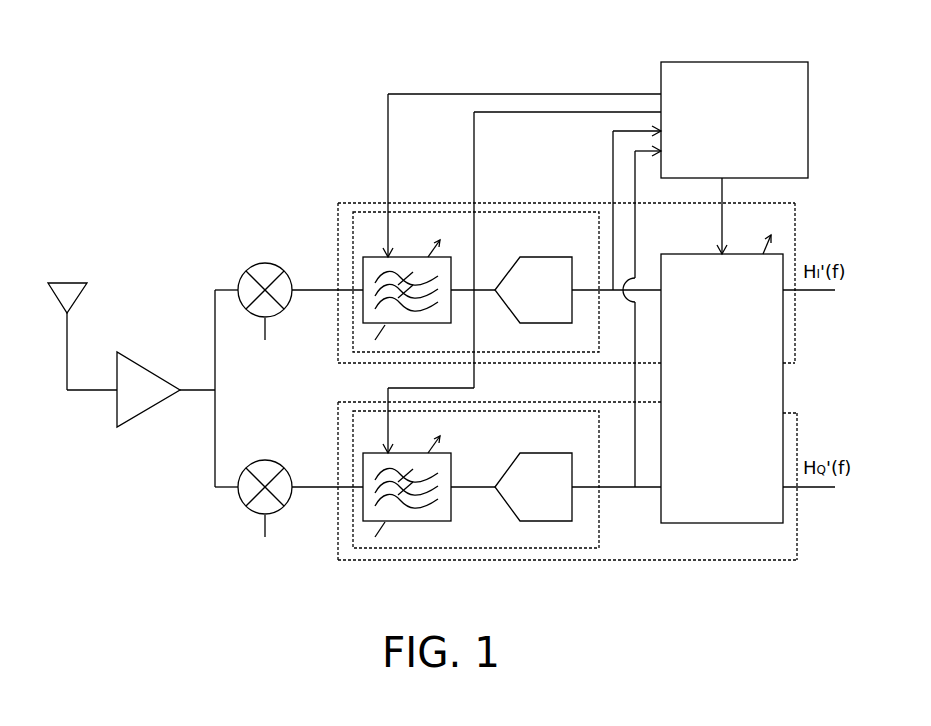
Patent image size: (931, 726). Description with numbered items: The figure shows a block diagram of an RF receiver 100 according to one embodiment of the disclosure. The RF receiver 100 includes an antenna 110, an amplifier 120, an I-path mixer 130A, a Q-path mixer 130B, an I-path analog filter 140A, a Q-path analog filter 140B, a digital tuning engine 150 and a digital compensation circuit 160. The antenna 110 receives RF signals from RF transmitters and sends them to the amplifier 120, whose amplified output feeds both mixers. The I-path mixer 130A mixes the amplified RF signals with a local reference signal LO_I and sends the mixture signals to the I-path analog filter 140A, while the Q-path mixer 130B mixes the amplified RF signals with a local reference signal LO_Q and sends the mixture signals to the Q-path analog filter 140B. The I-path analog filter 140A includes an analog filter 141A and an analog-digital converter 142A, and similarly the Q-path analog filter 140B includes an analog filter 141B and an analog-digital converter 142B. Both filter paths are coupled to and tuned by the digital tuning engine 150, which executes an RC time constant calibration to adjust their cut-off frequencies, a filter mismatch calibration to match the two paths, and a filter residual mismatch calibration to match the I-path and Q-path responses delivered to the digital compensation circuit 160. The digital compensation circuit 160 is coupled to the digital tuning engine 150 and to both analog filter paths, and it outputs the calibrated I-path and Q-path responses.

The RF receiver 100 is at (65, 34).
The antenna 110 is at (67, 283).
The amplifier 120 is at (148, 410).
The I-path mixer 130A is at (265, 263).
The Q-path mixer 130B is at (239, 501).
The I-path analog filter 140A is at (353, 342).
The Q-path analog filter 140B is at (353, 432).
The analog filter 141A is at (418, 257).
The analog filter 141B is at (408, 521).
The analog-digital converter 142A is at (508, 280).
The analog-digital converter 142B is at (545, 521).
The digital tuning engine 150 is at (735, 62).
The digital compensation circuit 160 is at (722, 523).